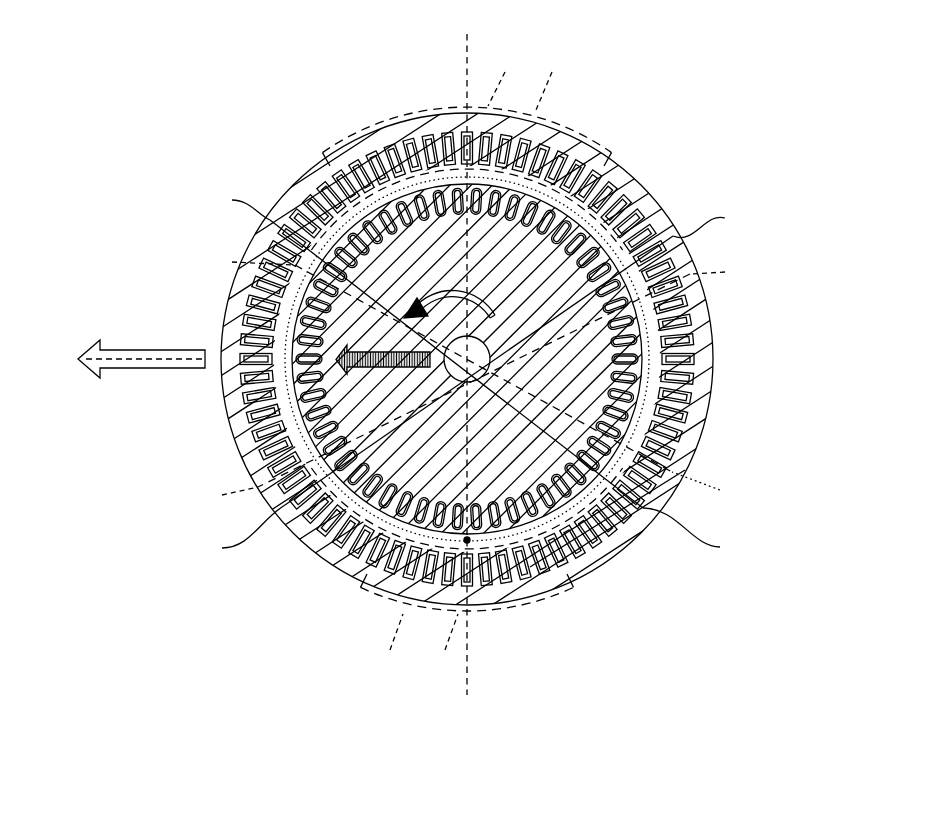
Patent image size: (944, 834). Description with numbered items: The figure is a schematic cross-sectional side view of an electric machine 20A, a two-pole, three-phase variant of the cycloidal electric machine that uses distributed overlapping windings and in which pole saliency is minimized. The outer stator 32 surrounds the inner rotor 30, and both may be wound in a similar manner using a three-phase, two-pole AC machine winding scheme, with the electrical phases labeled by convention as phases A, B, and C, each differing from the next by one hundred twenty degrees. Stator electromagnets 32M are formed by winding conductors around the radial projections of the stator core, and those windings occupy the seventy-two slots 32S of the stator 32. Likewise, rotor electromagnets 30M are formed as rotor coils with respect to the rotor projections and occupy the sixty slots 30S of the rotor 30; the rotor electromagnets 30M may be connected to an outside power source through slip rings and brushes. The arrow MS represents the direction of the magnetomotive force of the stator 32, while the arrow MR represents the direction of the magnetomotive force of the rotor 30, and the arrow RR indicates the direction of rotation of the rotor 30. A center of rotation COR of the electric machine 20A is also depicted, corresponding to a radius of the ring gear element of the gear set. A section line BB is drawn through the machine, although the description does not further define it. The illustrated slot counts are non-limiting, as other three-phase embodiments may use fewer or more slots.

The electric machine 20A is at (738, 51).
The rotor 30 is at (549, 385).
The rotor electromagnets 30M is at (575, 195).
The slots of the rotor 30S is at (572, 232).
The stator 32 is at (698, 352).
The stator electromagnets 32M is at (327, 526).
The slots of the stator 32S is at (363, 563).
The center of rotation COR is at (530, 567).
The direction of rotation RR is at (471, 288).
The direction of MMF of the rotor MR is at (378, 368).
The direction of MMF of the stator MS is at (146, 350).
The axis line B-B BB is at (467, 36).